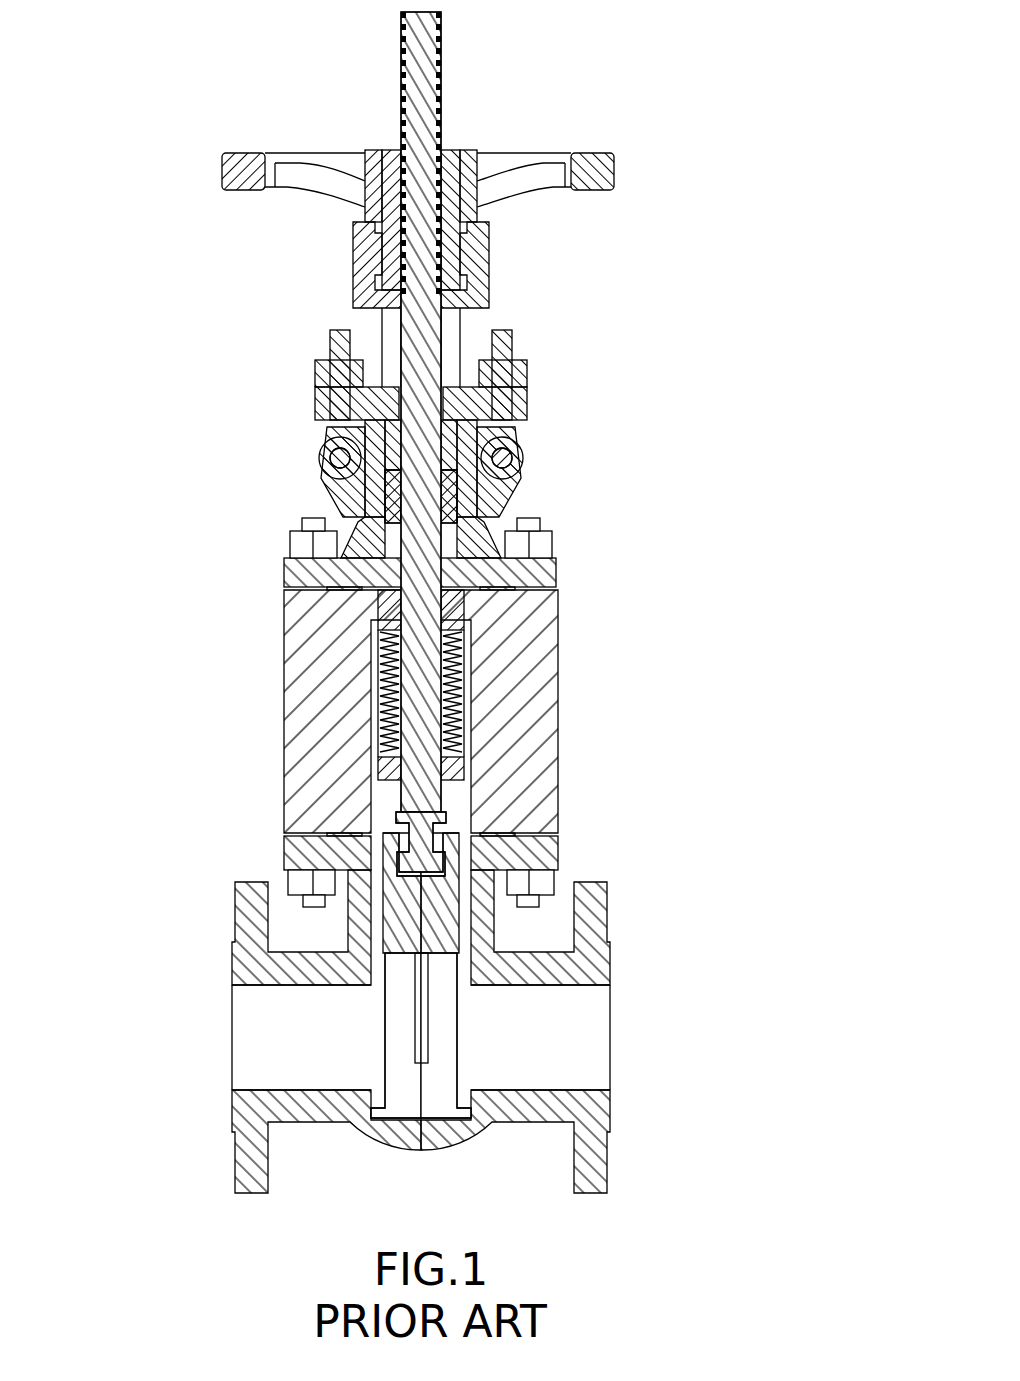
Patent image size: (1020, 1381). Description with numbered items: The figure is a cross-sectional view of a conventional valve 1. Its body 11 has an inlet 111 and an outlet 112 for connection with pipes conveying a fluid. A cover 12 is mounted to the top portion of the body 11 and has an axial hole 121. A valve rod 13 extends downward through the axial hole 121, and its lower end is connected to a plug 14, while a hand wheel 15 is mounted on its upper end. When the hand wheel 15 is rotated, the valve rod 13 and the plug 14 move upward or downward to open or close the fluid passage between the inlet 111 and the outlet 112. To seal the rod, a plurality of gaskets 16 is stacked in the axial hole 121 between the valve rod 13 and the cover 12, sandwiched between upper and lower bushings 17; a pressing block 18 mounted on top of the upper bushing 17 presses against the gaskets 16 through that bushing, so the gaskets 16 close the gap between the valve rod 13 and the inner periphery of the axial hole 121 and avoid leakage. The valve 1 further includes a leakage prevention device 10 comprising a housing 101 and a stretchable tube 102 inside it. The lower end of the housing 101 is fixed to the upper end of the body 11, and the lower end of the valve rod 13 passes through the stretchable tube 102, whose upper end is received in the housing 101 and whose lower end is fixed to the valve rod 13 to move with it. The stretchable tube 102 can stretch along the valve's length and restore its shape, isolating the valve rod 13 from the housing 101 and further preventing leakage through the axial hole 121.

The valve 1 is at (140, 620).
The leakage prevention device 10 is at (470, 697).
The housing 101 is at (543, 788).
The stretchable tube 102 is at (462, 683).
The body 11 is at (358, 1115).
The inlet 111 is at (248, 1013).
The outlet 112 is at (600, 1016).
The cover 12 is at (545, 568).
The axial hole 121 is at (383, 512).
The valve rod 13 is at (413, 645).
The plug 14 is at (408, 918).
The hand wheel 15 is at (603, 158).
The gaskets 16 is at (388, 476).
The bushings 17 is at (388, 427).
The pressing block 18 is at (520, 386).